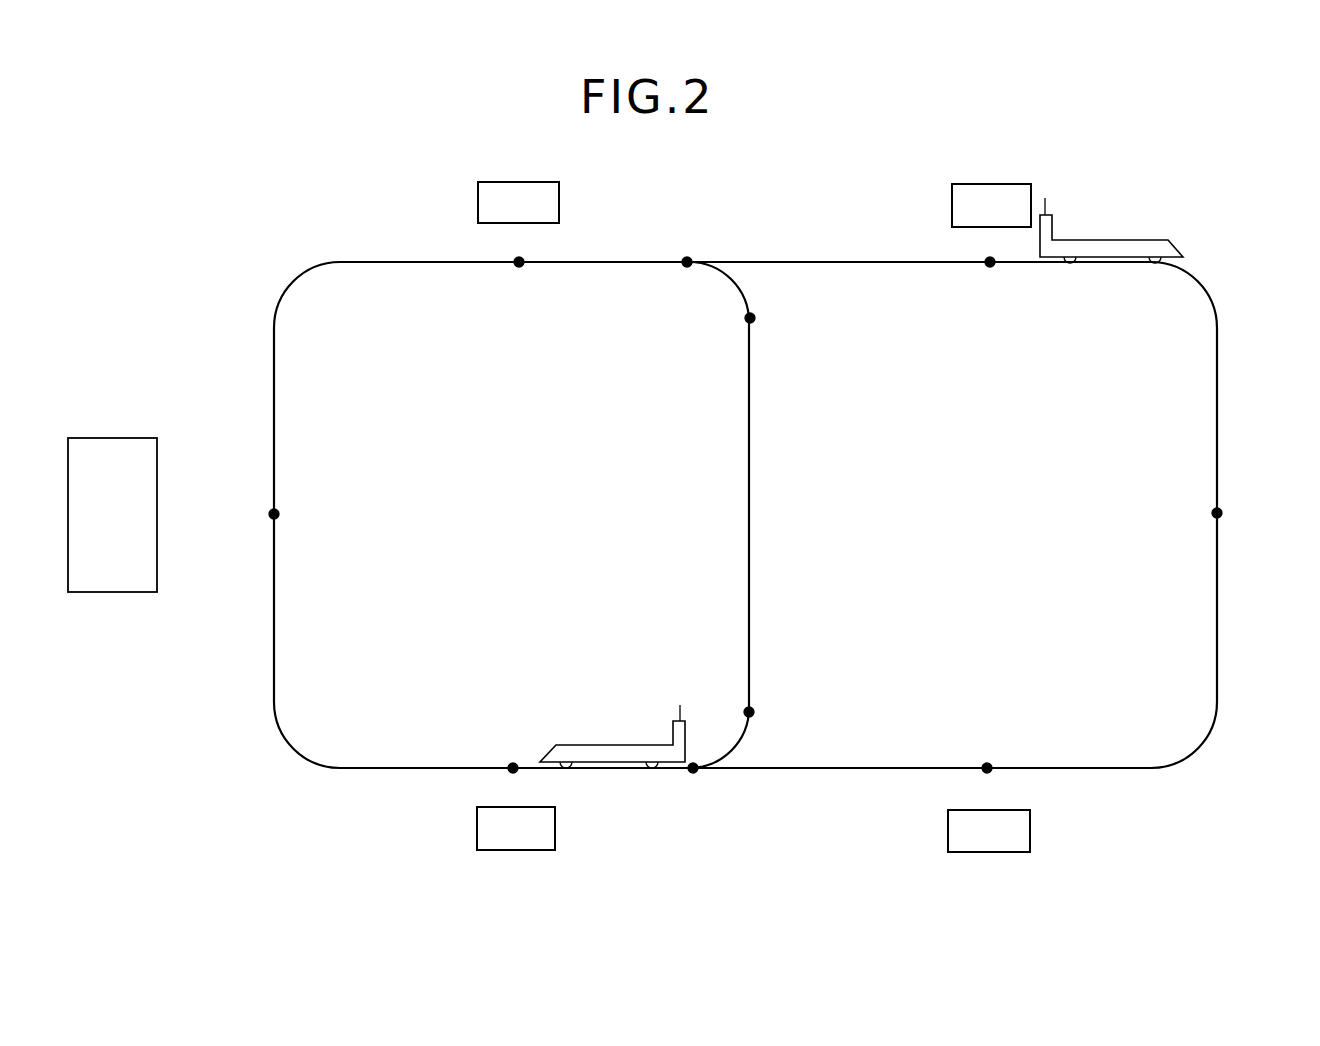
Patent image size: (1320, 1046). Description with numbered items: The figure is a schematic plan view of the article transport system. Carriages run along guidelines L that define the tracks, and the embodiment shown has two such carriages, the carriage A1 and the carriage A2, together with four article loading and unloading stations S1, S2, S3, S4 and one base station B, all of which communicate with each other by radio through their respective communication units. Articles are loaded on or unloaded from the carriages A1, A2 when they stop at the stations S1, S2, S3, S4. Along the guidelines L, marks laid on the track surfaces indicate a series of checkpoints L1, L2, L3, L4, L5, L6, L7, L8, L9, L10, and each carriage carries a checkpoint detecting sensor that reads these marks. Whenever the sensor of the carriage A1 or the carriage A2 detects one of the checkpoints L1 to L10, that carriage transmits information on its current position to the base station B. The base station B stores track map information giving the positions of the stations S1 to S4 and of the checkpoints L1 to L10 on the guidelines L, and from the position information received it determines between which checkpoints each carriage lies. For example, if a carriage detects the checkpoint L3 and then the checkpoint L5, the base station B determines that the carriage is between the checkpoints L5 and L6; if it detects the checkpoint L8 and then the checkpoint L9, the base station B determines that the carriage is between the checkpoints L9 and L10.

The guidelines L is at (1218, 585).
The checkpoint L1 is at (274, 514).
The checkpoint L2 is at (519, 262).
The checkpoint L3 is at (687, 262).
The checkpoint L4 is at (750, 318).
The checkpoint L5 is at (990, 262).
The checkpoint L6 is at (1217, 513).
The checkpoint L7 is at (987, 768).
The checkpoint L8 is at (749, 712).
The checkpoint L9 is at (693, 768).
The checkpoint L10 is at (513, 768).
The article loading and unloading station S1 is at (518, 202).
The article loading and unloading station S2 is at (991, 205).
The article loading and unloading station S3 is at (989, 831).
The article loading and unloading station S4 is at (516, 828).
The carriage A1 is at (1106, 209).
The carriage A2 is at (644, 702).
The base station B is at (119, 432).